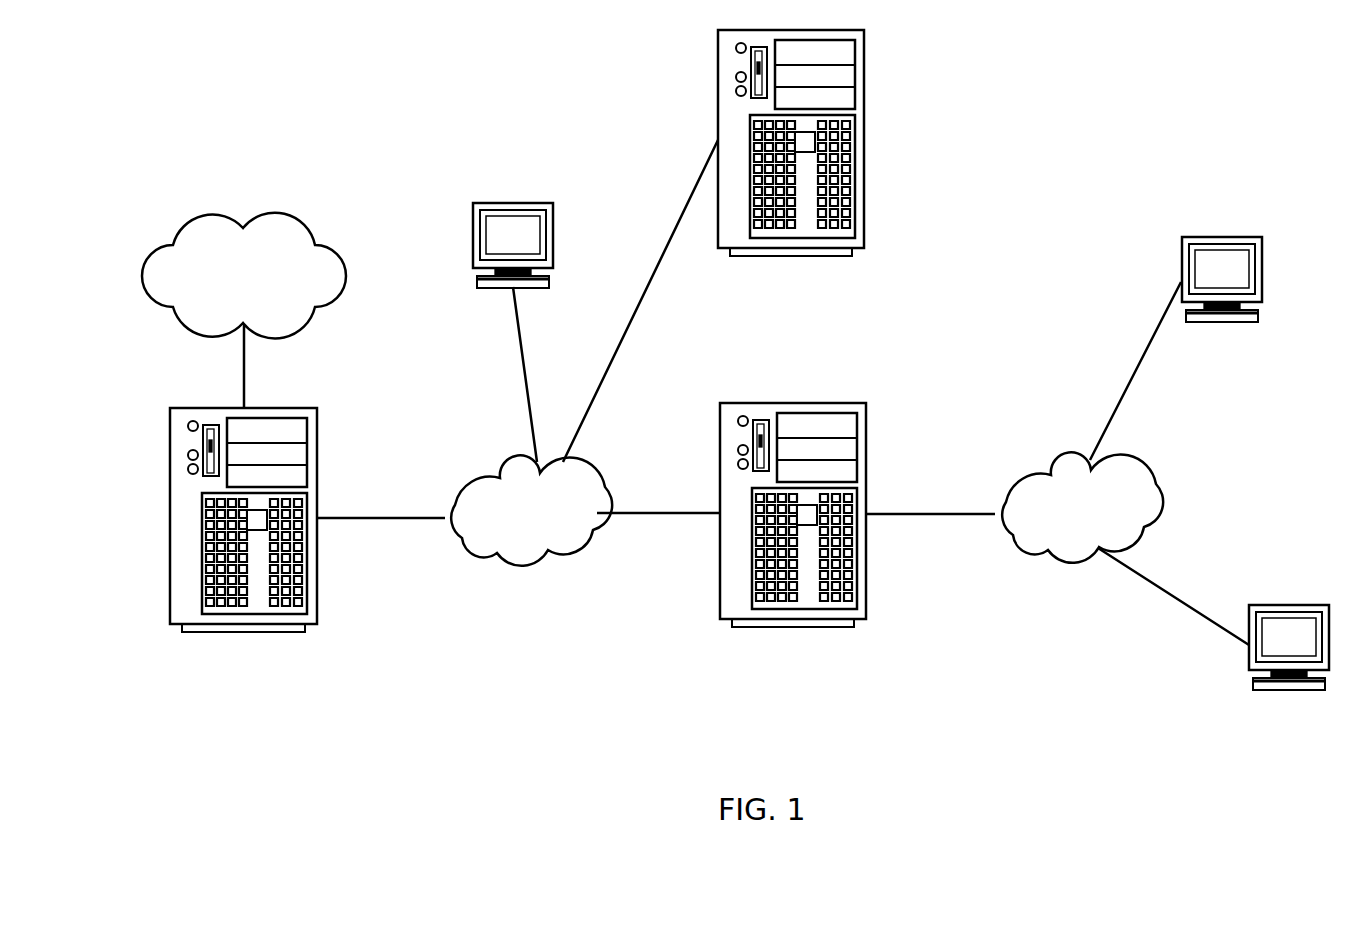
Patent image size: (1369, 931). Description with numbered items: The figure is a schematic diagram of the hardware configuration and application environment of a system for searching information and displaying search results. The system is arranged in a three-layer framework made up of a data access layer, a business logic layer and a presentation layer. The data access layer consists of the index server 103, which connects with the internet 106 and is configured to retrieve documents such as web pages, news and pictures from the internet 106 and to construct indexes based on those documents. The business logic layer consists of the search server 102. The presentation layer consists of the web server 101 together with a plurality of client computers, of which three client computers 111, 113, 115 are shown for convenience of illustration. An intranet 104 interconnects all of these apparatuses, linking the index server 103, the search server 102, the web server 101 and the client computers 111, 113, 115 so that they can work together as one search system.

The web server 101 is at (792, 258).
The search server 102 is at (793, 626).
The index server 103 is at (245, 633).
The intranet 104 is at (520, 562).
The internet 106 is at (303, 230).
The client computer 111 is at (555, 246).
The client computer 113 is at (1222, 237).
The client computer 115 is at (1285, 605).